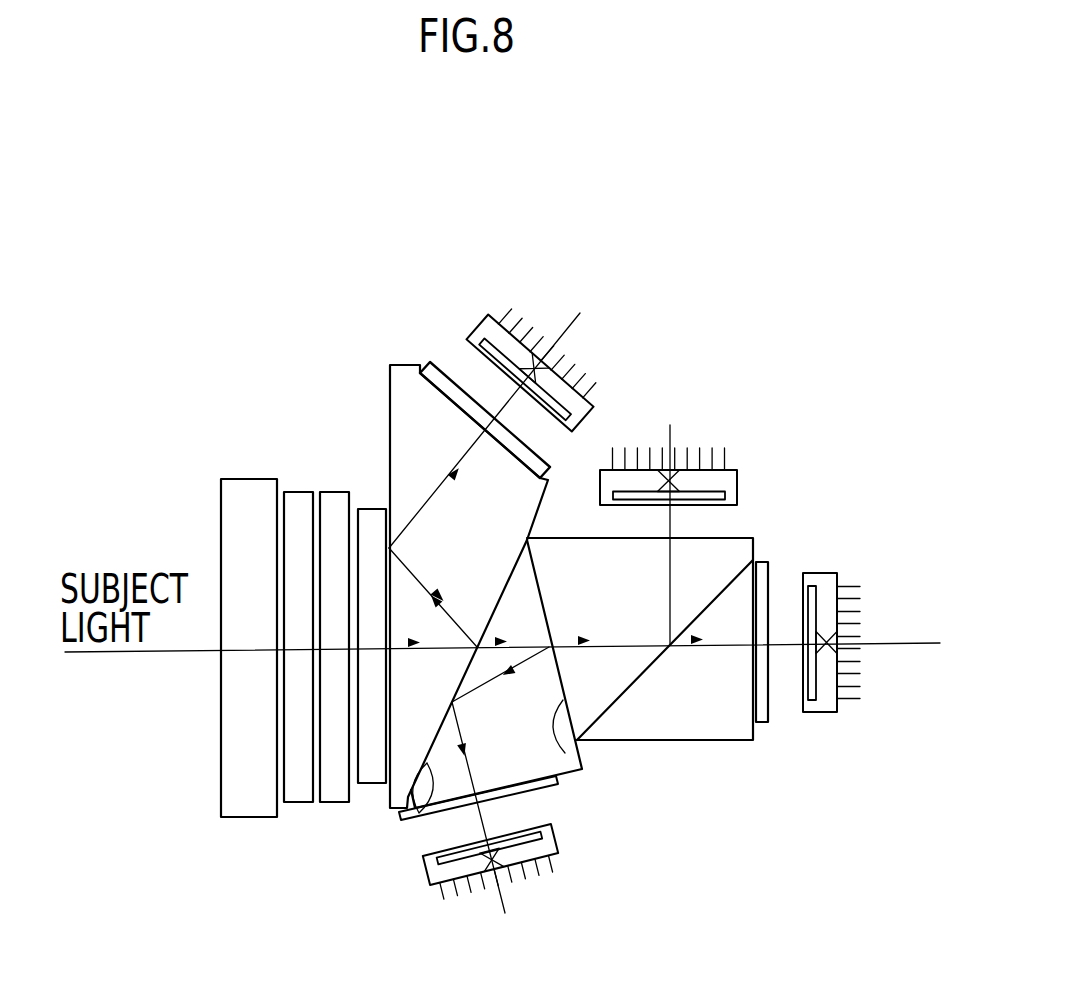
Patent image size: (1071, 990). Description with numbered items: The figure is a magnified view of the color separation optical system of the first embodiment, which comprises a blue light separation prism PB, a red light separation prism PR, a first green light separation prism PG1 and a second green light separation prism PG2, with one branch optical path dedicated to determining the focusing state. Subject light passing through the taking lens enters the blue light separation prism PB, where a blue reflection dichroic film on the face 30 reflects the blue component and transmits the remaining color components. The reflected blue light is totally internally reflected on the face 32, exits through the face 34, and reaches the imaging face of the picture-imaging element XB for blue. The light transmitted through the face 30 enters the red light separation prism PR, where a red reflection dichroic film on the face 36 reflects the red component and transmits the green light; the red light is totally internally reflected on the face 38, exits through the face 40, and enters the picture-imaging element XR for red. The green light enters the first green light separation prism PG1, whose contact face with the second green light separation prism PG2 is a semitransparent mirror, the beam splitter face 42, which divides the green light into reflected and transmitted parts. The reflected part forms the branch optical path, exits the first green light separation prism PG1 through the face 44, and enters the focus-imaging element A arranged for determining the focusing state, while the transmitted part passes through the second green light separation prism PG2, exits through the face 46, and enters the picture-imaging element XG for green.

The face 30 is at (440, 729).
The face 32 is at (388, 467).
The face 34 is at (433, 385).
The face 36 is at (582, 769).
The face 38 is at (425, 820).
The face 40 is at (445, 816).
The beam splitter face 42 is at (705, 600).
The face 44 is at (592, 540).
The face 46 is at (768, 673).
The picture-imaging element for blue XB is at (487, 335).
The picture-imaging element for red XR is at (550, 847).
The picture-imaging element for green XG is at (828, 700).
The focus-imaging element A is at (725, 487).
The blue light separation prism PB is at (417, 430).
The red light separation prism PR is at (543, 742).
The first green light separation prism PG1 is at (690, 557).
The second green light separation prism PG2 is at (712, 717).